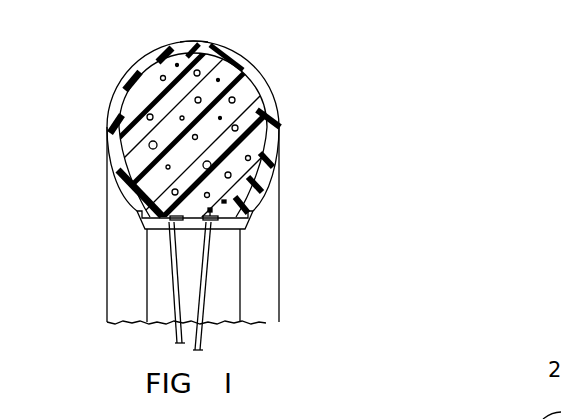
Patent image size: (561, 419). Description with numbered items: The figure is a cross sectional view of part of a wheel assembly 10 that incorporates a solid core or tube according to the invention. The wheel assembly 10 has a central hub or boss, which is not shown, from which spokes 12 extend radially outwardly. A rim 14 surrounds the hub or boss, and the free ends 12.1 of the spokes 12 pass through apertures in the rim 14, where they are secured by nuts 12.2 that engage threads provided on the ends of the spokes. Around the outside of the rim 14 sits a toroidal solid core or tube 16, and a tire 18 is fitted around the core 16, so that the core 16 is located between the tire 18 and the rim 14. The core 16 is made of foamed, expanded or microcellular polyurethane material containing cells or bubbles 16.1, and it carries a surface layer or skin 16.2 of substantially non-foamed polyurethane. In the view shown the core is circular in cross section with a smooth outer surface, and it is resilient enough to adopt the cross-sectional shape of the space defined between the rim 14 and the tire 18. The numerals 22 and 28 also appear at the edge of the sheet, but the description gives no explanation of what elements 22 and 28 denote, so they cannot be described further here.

The wheel assembly 10 is at (392, 179).
The spokes 12 is at (182, 310).
The free ends of the spokes 12.1 is at (150, 210).
The nuts 12.2 is at (160, 231).
The rim 14 is at (230, 260).
The solid core or tube 16 is at (218, 120).
The cells or bubbles 16.1 is at (140, 100).
The surface layer or skin 16.2 is at (266, 117).
The tire 18 is at (250, 66).
The element 22 is at (380, 418).
The element 28 is at (504, 418).